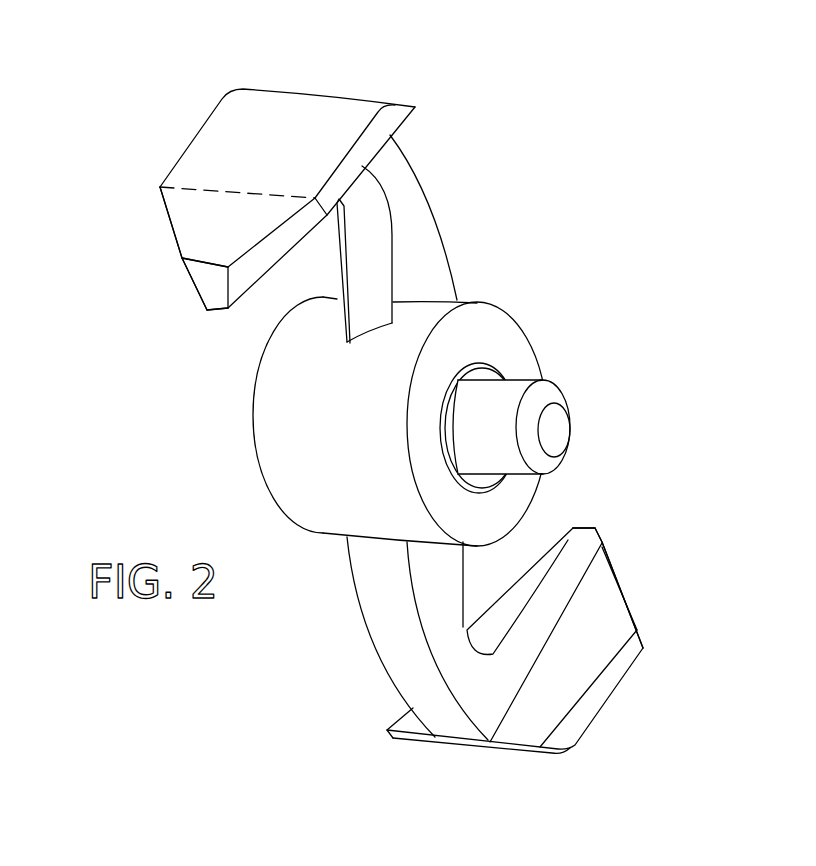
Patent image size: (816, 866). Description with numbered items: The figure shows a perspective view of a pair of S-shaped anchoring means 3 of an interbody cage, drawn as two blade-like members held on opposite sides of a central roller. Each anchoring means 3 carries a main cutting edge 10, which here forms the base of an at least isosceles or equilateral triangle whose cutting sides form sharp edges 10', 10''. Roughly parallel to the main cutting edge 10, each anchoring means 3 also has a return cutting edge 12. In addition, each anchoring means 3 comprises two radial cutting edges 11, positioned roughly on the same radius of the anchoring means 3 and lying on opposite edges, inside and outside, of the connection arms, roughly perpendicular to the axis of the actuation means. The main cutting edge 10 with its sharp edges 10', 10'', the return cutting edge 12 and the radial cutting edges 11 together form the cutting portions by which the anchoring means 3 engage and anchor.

The anchoring means 3 is at (122, 175).
The main cutting edge 10 is at (381, 372).
The sharp edge 10' is at (392, 409).
The sharp edge 10'' is at (391, 417).
The radial cutting edge 11 is at (341, 258).
The return cutting edge 12 is at (318, 92).